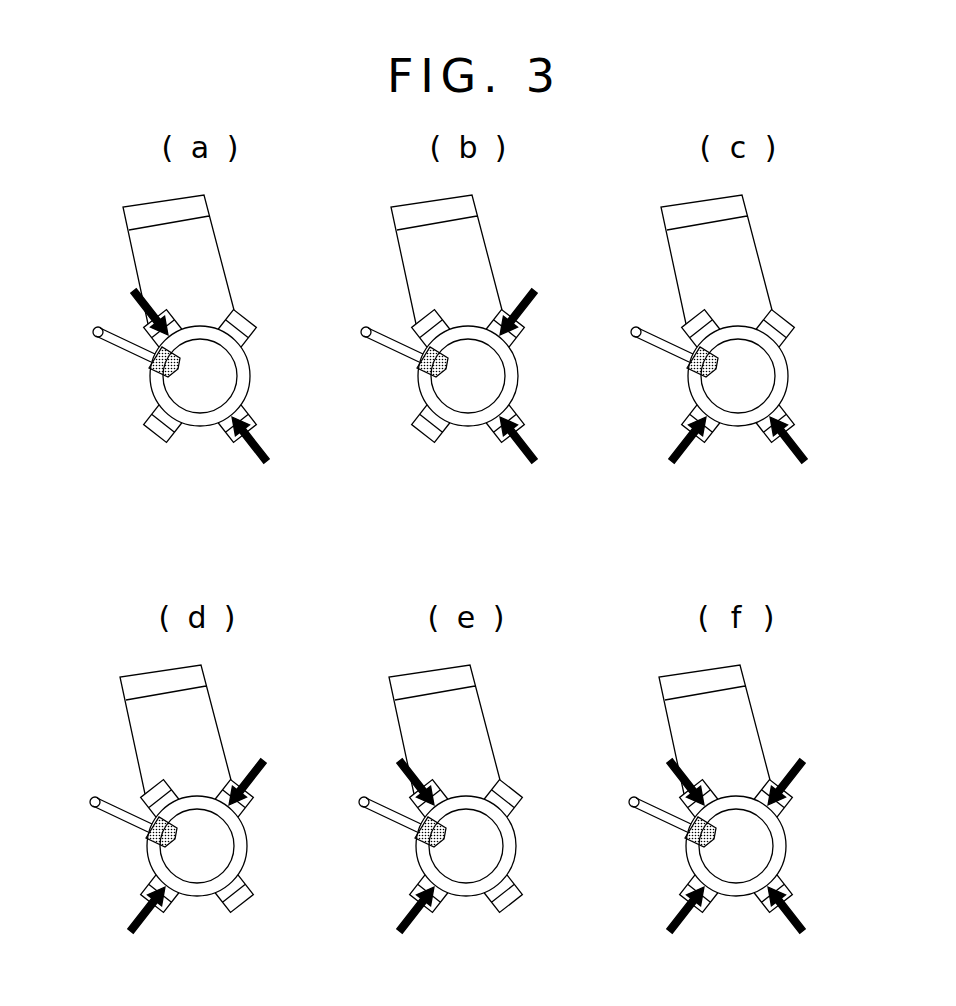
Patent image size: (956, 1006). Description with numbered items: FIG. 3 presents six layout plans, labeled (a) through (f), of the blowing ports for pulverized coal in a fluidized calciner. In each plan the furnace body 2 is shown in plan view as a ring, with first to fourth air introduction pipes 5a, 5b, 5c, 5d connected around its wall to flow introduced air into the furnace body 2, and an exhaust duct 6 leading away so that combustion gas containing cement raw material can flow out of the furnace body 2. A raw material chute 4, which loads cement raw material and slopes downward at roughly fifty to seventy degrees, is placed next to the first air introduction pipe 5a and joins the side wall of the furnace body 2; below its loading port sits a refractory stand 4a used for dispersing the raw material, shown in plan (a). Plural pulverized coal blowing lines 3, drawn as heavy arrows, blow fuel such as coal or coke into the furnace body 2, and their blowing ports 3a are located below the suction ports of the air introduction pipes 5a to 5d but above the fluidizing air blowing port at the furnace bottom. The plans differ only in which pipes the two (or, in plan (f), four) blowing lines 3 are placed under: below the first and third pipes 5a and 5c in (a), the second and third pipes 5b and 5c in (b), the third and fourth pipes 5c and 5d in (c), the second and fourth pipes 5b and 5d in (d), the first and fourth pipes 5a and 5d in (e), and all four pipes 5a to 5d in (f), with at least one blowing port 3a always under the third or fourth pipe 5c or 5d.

The furnace body 2 is at (438, 612).
The pulverized coal blowing lines 3 is at (455, 596).
The blowing ports 3a is at (200, 410).
The raw material chute 4 is at (377, 596).
The stand 4a is at (394, 597).
The first air introduction pipe 5a is at (390, 539).
The second air introduction pipe 5b is at (517, 528).
The third air introduction pipe 5c is at (534, 640).
The fourth air introduction pipe 5d is at (413, 687).
The exhaust duct 6 is at (466, 494).